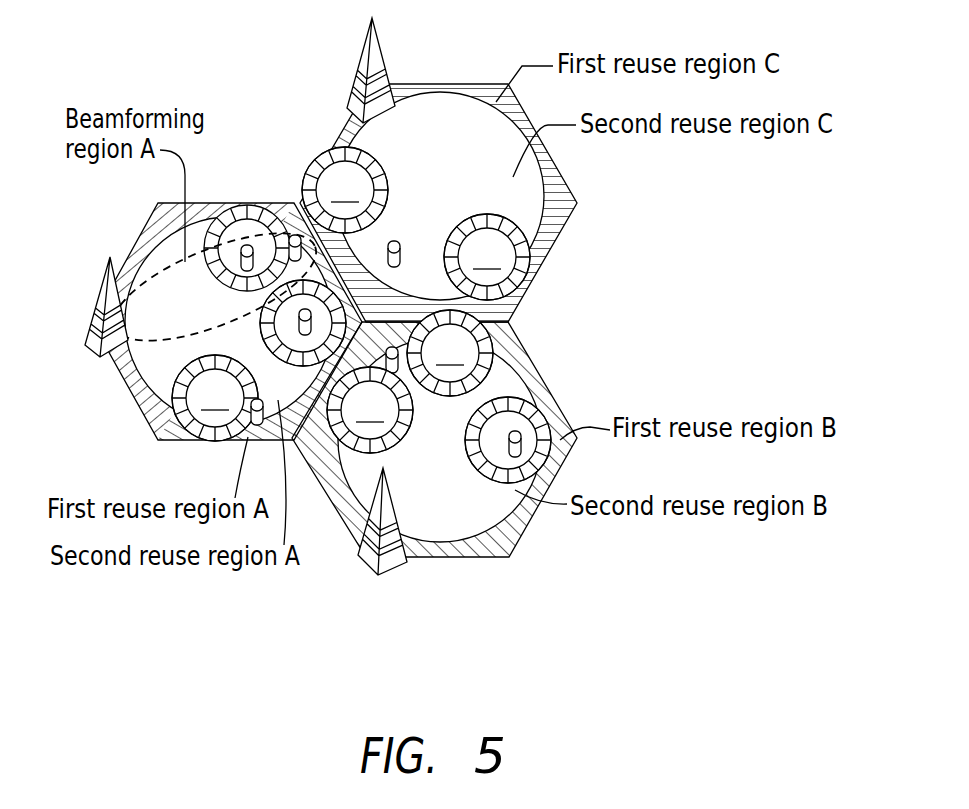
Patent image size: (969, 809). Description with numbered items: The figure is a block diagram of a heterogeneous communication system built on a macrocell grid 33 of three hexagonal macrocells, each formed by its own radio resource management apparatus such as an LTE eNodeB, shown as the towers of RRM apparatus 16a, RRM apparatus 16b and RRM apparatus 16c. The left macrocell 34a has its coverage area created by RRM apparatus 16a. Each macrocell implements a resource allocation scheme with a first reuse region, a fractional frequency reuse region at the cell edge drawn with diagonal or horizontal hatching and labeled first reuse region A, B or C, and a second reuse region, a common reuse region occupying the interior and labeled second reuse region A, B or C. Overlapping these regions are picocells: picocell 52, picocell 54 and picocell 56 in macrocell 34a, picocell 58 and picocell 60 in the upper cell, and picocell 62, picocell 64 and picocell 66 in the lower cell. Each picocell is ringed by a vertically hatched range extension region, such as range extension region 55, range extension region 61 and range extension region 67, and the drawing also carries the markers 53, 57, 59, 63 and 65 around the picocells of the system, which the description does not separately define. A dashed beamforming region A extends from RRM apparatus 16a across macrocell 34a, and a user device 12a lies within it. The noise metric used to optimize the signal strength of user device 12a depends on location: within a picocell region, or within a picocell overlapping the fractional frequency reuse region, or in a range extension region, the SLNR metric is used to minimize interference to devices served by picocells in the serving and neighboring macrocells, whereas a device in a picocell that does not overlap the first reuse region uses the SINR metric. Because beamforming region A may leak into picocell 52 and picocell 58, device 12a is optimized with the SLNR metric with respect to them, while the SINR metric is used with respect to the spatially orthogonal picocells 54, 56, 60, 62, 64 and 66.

The RRM apparatus 16a is at (111, 256).
The RRM apparatus 16b is at (390, 576).
The RRM apparatus 16c is at (379, 36).
The macrocell 34a is at (155, 207).
The user device 12a is at (238, 292).
The macrocell grid 33 is at (581, 324).
The picocell 52 is at (262, 233).
The access point antenna 53 is at (293, 237).
The picocell 54 is at (287, 323).
The range extension region 55 is at (276, 348).
The picocell 56 is at (215, 398).
The boundary region of third sector 57 is at (205, 362).
The picocell 58 is at (345, 190).
The boundary region of first sector C 59 is at (373, 165).
The picocell 60 is at (487, 257).
The range extension region 61 is at (487, 212).
The picocell 62 is at (450, 353).
The boundary region of first sector B 63 is at (461, 389).
The picocell 64 is at (370, 410).
The boundary region of second sector B 65 is at (386, 446).
The picocell 66 is at (500, 446).
The range extension region 67 is at (502, 472).